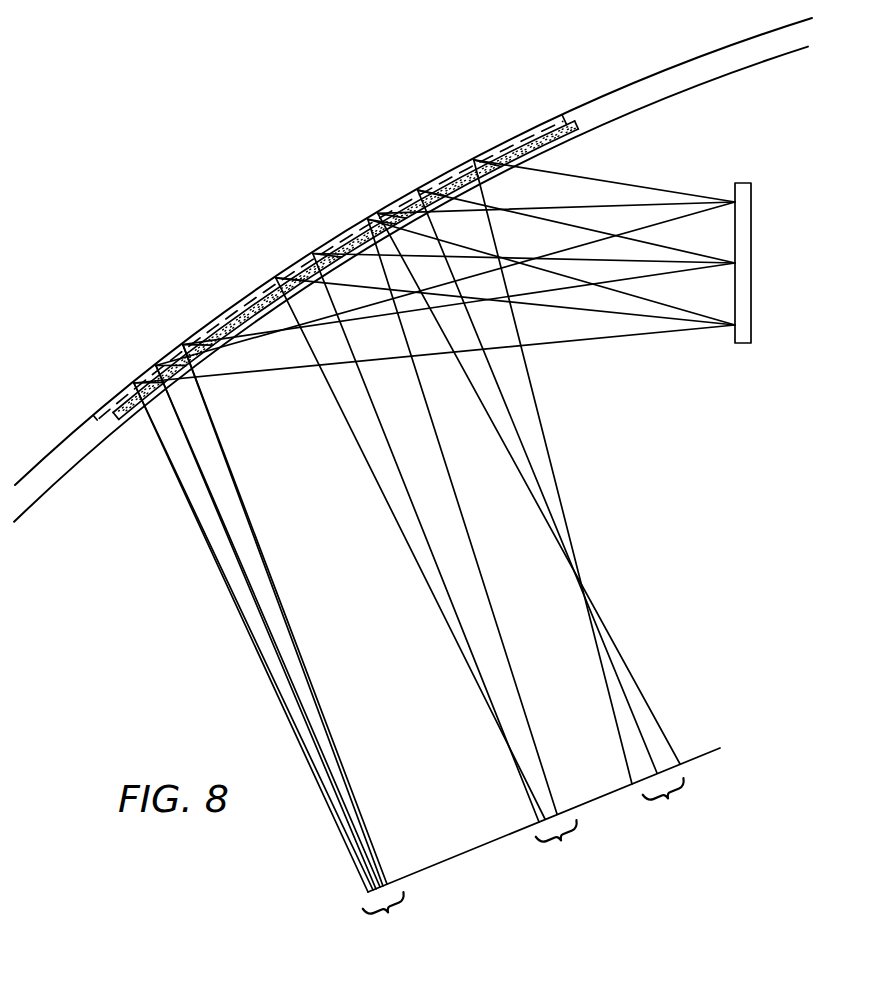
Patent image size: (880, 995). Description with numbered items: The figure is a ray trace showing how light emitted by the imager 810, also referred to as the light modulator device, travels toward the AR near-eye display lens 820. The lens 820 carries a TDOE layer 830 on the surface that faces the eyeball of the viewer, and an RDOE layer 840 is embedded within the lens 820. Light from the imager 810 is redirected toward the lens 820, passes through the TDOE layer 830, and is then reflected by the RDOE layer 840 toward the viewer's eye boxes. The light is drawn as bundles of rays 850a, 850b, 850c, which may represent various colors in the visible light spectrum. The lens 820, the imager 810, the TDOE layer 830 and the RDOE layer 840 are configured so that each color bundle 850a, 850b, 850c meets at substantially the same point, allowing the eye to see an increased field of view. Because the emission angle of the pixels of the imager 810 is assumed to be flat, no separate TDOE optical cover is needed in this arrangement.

The imager 810 is at (752, 237).
The AR near-eye display lens 820 is at (638, 81).
The TDOE layer 830 is at (562, 146).
The RDOE layer 840 is at (522, 136).
The bundle of light rays 850a is at (282, 649).
The bundle of light rays 850b is at (443, 551).
The bundle of light rays 850c is at (545, 500).